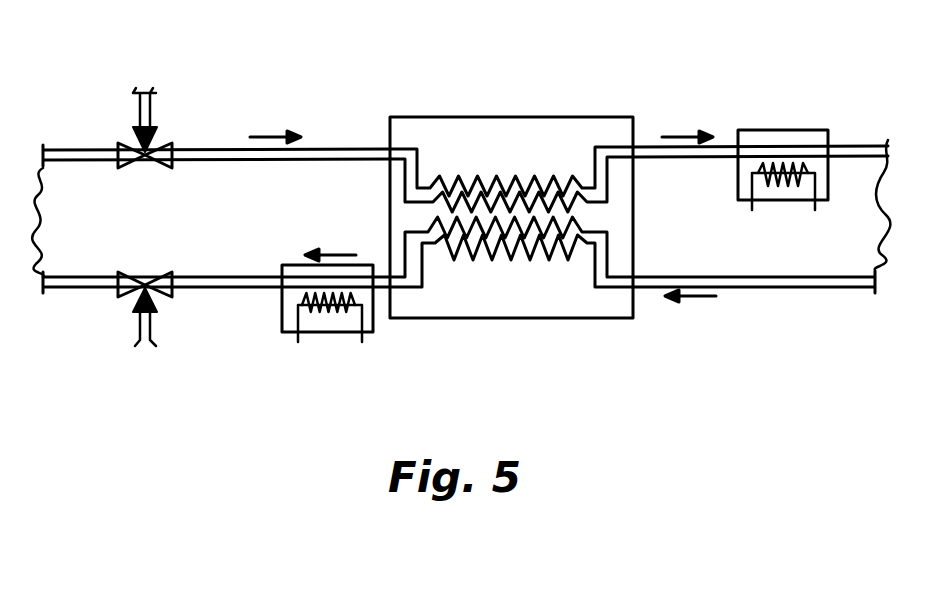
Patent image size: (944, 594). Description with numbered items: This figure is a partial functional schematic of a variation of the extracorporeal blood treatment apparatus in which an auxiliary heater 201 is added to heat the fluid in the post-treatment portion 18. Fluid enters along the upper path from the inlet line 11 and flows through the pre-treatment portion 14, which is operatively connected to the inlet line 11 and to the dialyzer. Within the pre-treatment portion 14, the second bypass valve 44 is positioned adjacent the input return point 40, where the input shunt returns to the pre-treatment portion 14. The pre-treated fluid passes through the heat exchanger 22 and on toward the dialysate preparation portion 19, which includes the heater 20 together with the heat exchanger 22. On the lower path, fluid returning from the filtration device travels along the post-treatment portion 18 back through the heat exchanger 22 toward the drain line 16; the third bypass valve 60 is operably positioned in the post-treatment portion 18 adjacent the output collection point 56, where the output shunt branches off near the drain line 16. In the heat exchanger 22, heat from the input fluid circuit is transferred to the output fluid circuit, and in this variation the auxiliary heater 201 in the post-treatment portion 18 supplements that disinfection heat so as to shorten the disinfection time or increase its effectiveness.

The inlet line 11 is at (86, 148).
The second bypass valve 44 is at (118, 148).
The input return point 40 is at (140, 148).
The drain line 16 is at (72, 278).
The third bypass valve 60 is at (125, 292).
The output collection point 56 is at (152, 300).
The auxiliary heater 201 is at (308, 308).
The heat exchanger 22 is at (552, 318).
The dialysate preparation portion 19 is at (830, 167).
The pre-treatment portion 14 is at (718, 143).
The heater 20 is at (757, 165).
The post-treatment portion 18 is at (755, 275).